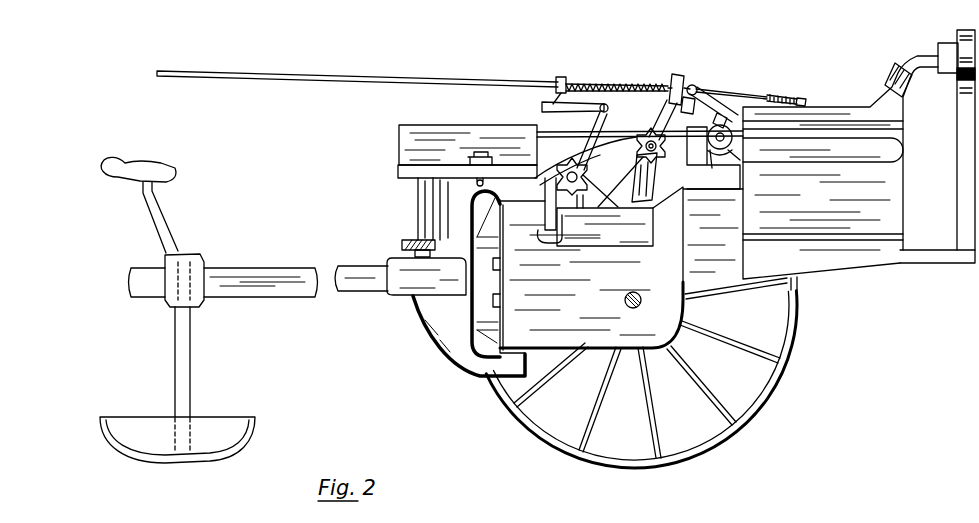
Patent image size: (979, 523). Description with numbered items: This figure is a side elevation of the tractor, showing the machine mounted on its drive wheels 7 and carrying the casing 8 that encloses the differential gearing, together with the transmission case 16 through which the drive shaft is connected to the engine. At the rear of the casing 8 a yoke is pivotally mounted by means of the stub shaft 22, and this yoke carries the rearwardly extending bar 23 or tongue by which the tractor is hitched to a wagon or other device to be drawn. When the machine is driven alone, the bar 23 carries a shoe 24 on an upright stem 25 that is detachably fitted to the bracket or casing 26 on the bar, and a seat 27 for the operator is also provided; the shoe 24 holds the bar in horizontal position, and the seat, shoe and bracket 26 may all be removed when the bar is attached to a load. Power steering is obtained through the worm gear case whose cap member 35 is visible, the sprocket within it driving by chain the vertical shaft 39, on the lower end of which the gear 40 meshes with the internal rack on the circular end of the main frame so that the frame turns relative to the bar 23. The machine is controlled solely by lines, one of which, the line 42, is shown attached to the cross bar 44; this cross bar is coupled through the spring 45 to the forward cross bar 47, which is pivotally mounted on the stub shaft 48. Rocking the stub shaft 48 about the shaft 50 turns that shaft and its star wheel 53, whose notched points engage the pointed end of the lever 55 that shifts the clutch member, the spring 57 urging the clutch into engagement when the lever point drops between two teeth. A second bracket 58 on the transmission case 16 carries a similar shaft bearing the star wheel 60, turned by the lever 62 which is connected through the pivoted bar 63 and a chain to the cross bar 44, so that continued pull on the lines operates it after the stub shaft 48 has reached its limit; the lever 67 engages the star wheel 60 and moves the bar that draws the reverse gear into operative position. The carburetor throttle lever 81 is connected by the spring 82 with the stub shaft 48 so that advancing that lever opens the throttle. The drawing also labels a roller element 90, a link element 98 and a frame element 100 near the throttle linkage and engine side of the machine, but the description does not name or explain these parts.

The wheels 7 is at (758, 398).
The casing 8 is at (588, 276).
The transmission case 16 is at (605, 227).
The stub shaft 22 is at (430, 283).
The bar 23 is at (262, 291).
The shoe 24 is at (211, 456).
The upright stem 25 is at (184, 364).
The bracket or casing 26 is at (197, 266).
The seat 27 is at (133, 172).
The cap member 35 is at (467, 155).
The vertical shaft 39 is at (417, 189).
The gear 40 is at (410, 240).
The line 42 is at (310, 75).
The cross bar 44 is at (562, 77).
The spring 45 is at (605, 82).
The forward cross bar 47 is at (678, 74).
The stub shaft 48 is at (656, 120).
The shaft 50 is at (645, 147).
The star wheel 53 is at (650, 128).
The lever 55 is at (695, 104).
The spring 57 is at (687, 217).
The bracket 58 is at (578, 203).
The star wheel 60 is at (590, 181).
The lever 62 is at (590, 122).
The pivoted bar 63 is at (548, 106).
The lever 67 is at (544, 191).
The lever 81 is at (803, 99).
The spring 82 is at (772, 96).
The roller 90 is at (722, 125).
The link 98 is at (706, 118).
The frame 100 is at (743, 152).